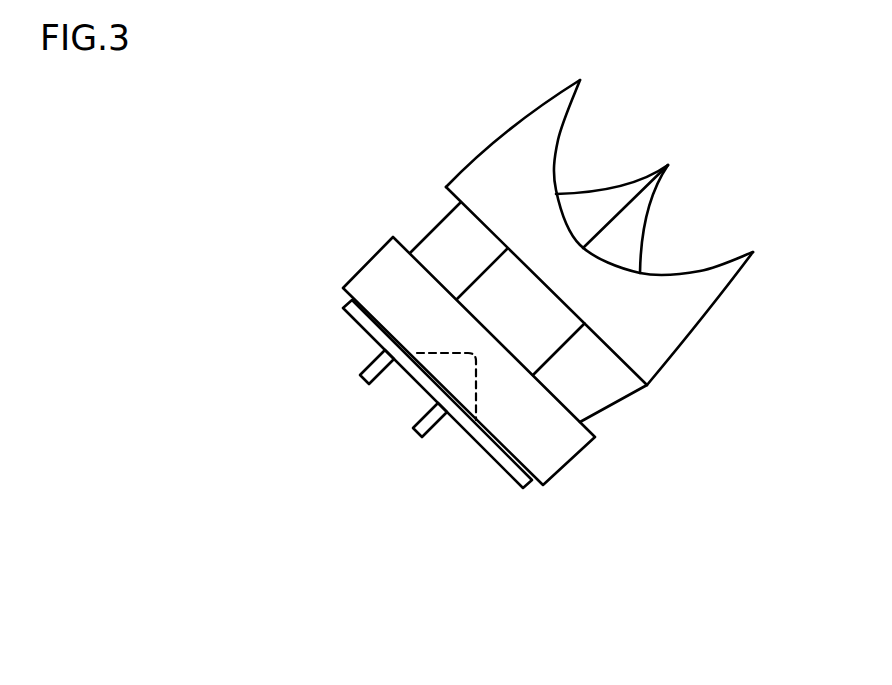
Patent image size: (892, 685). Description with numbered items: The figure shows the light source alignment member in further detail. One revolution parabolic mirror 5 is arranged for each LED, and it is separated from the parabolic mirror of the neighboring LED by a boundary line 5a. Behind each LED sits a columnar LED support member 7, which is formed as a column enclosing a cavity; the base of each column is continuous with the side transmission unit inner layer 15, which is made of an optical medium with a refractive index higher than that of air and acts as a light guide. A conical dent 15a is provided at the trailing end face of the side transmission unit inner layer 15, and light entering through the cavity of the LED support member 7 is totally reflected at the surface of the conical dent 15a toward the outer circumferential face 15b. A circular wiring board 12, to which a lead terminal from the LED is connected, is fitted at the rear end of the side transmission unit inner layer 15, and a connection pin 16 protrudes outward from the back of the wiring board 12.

The revolution parabolic mirror 5 is at (628, 232).
The boundary line 5a is at (623, 210).
The LED support member 7 is at (502, 282).
The wiring board 12 is at (364, 322).
The side transmission unit inner layer 15 is at (510, 405).
The conical dent 15a is at (477, 380).
The outer circumferential face 15b is at (560, 432).
The connection pin 16 is at (430, 422).